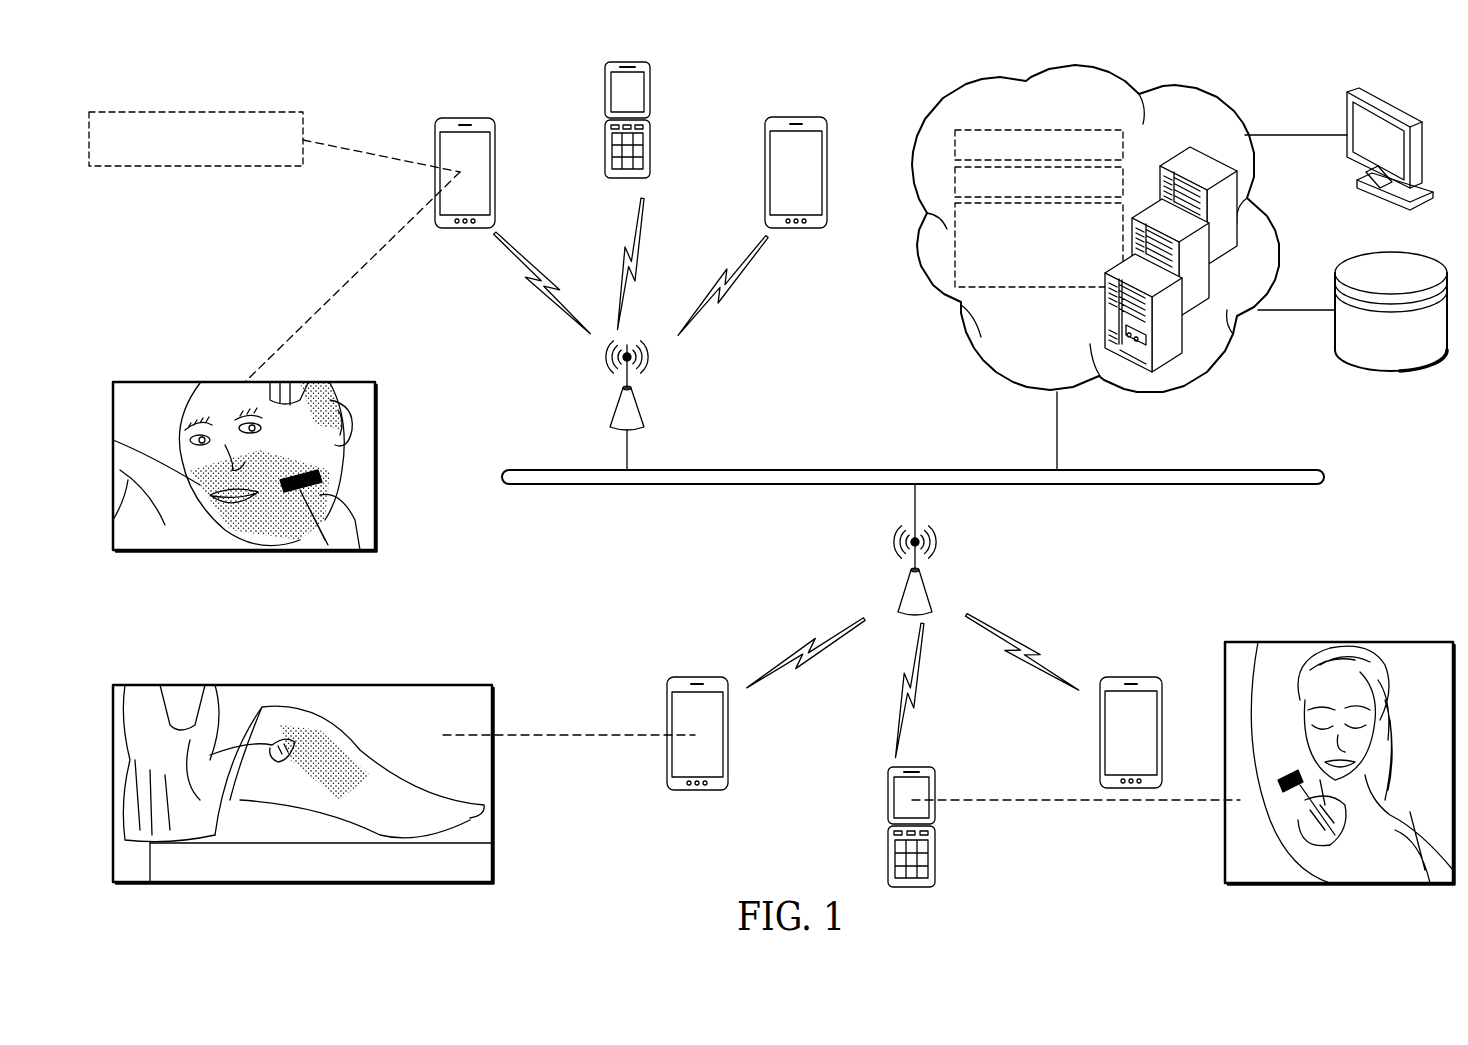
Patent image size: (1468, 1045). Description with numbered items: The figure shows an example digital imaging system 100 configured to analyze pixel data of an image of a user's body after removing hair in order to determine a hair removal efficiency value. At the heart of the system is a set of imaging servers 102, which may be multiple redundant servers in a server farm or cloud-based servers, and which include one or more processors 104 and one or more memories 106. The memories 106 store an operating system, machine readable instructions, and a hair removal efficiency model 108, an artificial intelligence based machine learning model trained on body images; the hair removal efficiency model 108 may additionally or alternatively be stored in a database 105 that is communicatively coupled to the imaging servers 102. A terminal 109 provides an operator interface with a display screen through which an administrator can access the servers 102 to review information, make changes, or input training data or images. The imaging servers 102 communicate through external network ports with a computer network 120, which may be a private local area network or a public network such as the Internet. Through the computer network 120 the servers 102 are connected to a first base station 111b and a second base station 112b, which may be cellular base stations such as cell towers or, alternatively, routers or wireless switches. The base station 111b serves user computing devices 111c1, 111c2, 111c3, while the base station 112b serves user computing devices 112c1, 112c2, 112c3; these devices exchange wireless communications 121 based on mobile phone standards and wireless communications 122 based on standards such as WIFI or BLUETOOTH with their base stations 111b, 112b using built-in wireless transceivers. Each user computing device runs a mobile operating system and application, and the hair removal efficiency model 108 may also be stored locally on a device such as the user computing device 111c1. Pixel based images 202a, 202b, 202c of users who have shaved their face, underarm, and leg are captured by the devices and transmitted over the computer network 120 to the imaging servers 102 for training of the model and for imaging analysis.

The digital imaging system 100 is at (312, 85).
The imaging server 102 is at (1203, 86).
The processor 104 is at (1080, 130).
The database 105 is at (1393, 252).
The memory 106 is at (955, 183).
The hair removal efficiency model 108 is at (303, 122).
The terminal 109 is at (1395, 100).
The base station 111b is at (640, 405).
The user computing device 111c1 is at (495, 175).
The user computing device 111c2 is at (650, 92).
The user computing device 111c3 is at (765, 178).
The base station 112b is at (900, 590).
The user computing device 112c1 is at (728, 742).
The user computing device 112c2 is at (888, 814).
The user computing device 112c3 is at (1100, 742).
The computer network 120 is at (1280, 470).
The wireless communications 121 is at (636, 232).
The wireless communications 122 is at (556, 300).
The image 202a is at (167, 382).
The image 202b is at (1338, 642).
The image 202c is at (300, 685).